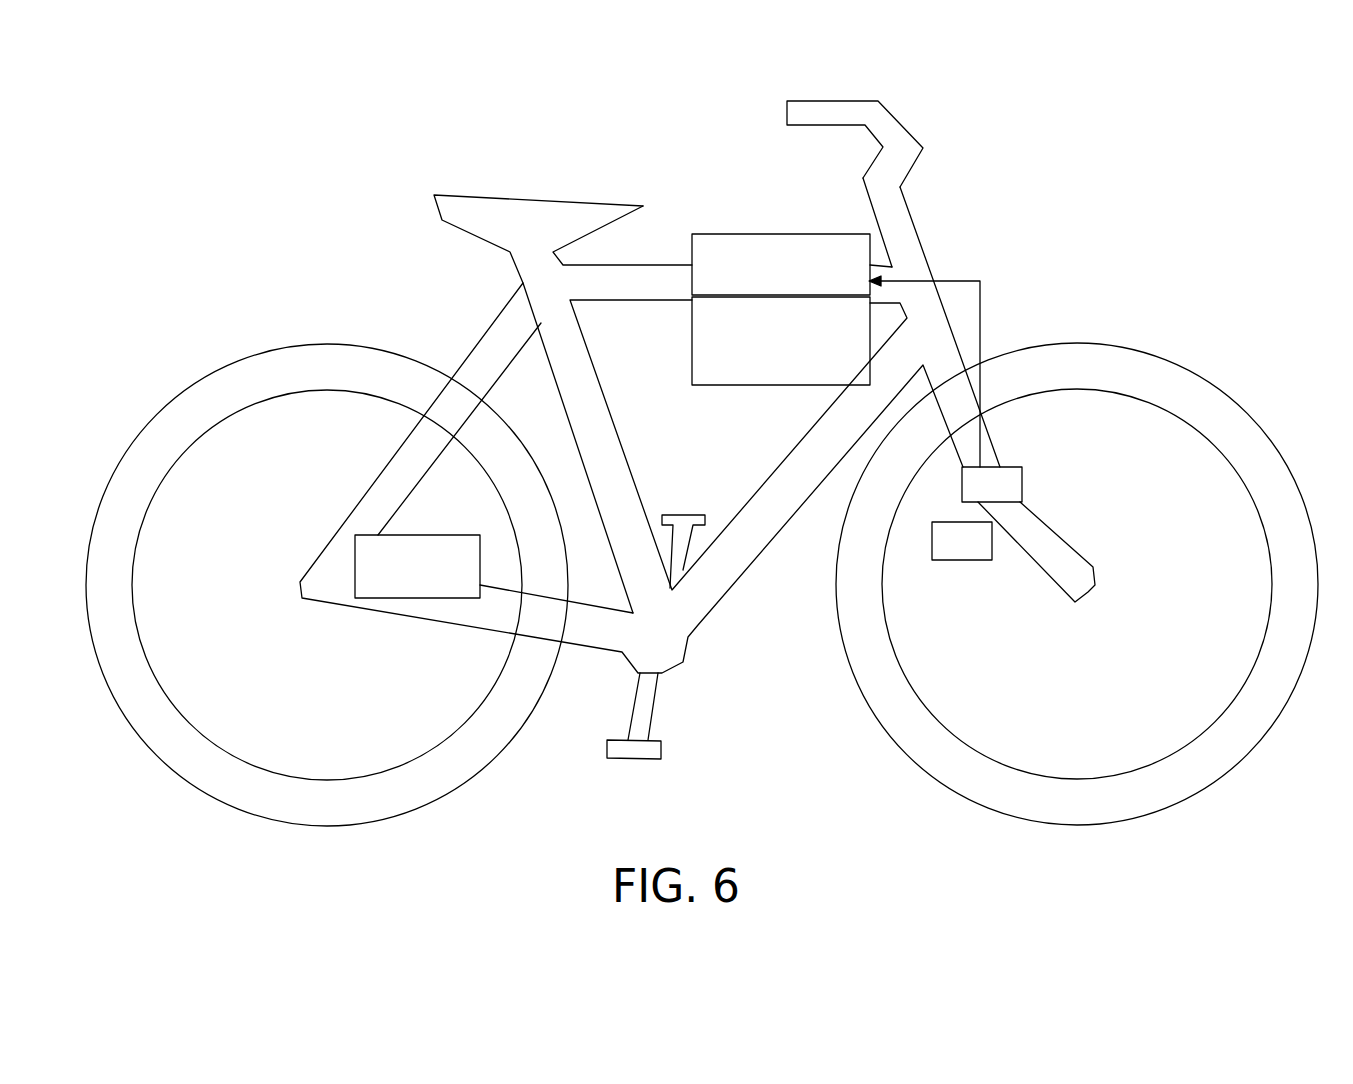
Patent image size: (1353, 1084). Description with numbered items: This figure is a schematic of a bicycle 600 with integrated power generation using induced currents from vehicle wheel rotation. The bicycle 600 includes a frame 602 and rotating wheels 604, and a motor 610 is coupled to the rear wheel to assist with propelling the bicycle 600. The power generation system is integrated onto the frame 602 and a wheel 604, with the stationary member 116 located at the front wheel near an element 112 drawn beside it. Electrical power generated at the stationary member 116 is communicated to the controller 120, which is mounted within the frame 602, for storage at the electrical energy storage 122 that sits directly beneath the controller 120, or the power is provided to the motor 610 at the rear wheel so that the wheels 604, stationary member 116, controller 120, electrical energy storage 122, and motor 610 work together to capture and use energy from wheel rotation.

The bicycle 600 is at (1093, 153).
The frame 602 is at (903, 123).
The rotating wheels 604 is at (253, 356).
The controller 120 is at (705, 234).
The electrical energy storage 122 is at (692, 378).
The motor 610 is at (355, 565).
The stationary member 116 is at (1011, 496).
The component 112 is at (981, 553).